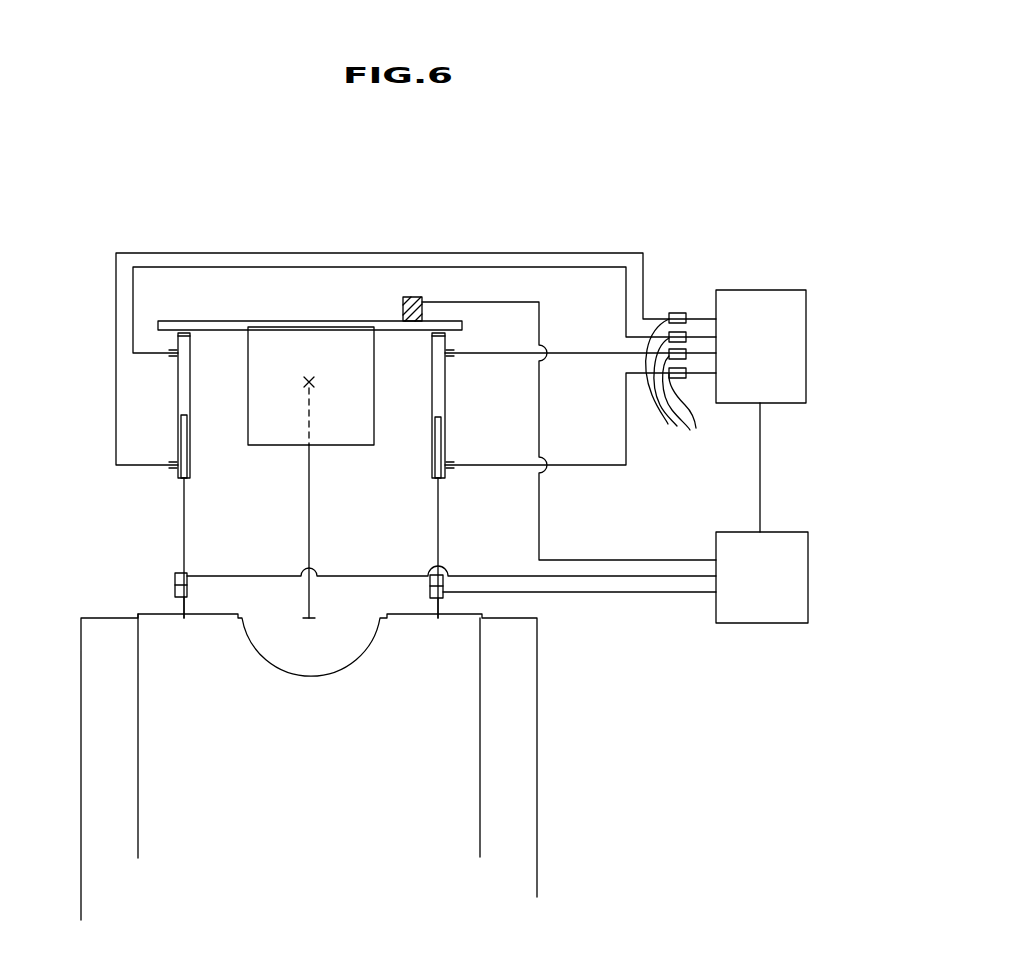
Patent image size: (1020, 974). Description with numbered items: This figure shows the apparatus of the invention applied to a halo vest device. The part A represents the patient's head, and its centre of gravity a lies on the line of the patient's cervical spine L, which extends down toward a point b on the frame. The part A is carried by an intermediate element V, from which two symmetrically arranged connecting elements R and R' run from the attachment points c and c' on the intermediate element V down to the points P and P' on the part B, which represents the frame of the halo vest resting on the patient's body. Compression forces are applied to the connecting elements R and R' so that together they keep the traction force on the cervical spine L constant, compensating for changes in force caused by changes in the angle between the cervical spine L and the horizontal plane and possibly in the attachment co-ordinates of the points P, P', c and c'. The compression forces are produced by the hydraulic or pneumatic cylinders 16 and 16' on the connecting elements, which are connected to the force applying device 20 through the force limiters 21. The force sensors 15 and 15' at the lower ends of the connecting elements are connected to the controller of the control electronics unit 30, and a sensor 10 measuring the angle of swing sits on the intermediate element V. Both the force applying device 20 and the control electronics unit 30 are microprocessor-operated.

The sensor measuring angle of swing 10 is at (412, 297).
The force applying device 20 is at (790, 346).
The force limiters 21 is at (671, 382).
The control electronics unit 30 is at (786, 575).
The force sensor 15 is at (126, 585).
The force sensor 15' is at (481, 570).
The hydraulic or pneumatic cylinder 16 is at (111, 405).
The hydraulic or pneumatic cylinder 16' is at (478, 405).
The intermediate element V is at (205, 322).
The attachment point c is at (117, 353).
The attachment point c' is at (475, 328).
The part representing the patient's head A is at (345, 375).
The centre of gravity a is at (300, 382).
The point b is at (309, 620).
The cervical spine L is at (312, 520).
The connecting element R is at (138, 548).
The connecting element R' is at (480, 548).
The point on part B P is at (178, 643).
The point on part B P' is at (431, 644).
The part representing the frame resting on the patient's body B is at (375, 737).